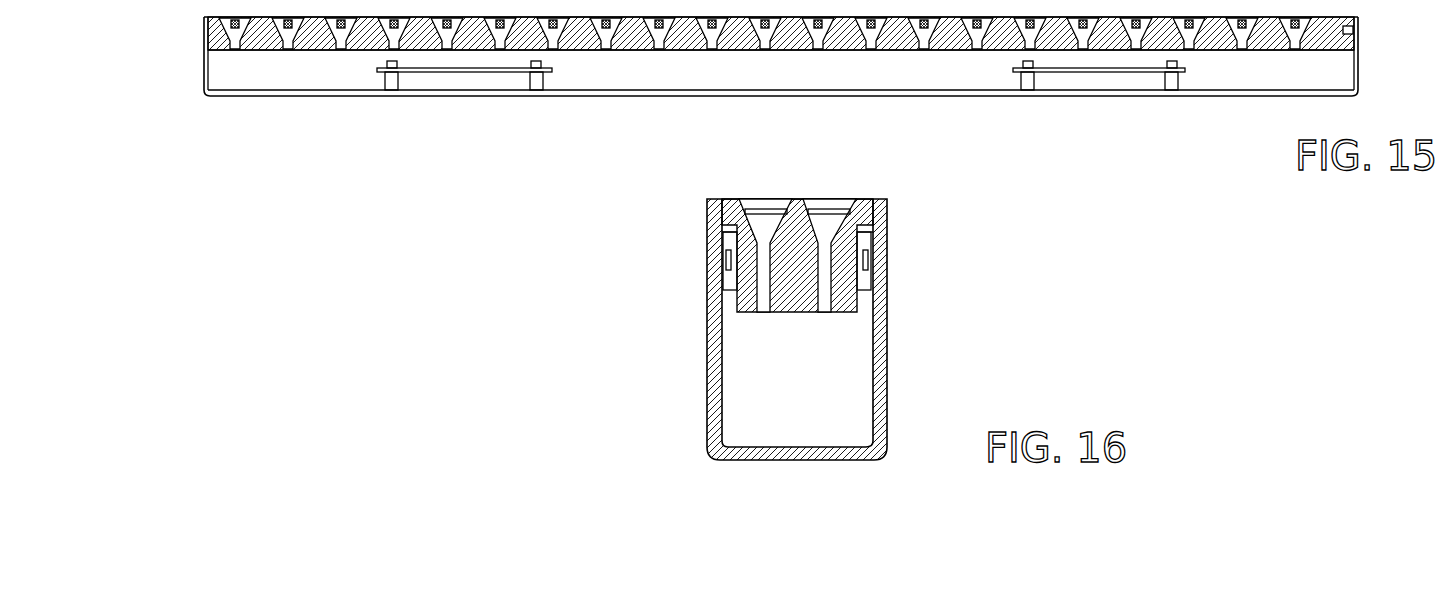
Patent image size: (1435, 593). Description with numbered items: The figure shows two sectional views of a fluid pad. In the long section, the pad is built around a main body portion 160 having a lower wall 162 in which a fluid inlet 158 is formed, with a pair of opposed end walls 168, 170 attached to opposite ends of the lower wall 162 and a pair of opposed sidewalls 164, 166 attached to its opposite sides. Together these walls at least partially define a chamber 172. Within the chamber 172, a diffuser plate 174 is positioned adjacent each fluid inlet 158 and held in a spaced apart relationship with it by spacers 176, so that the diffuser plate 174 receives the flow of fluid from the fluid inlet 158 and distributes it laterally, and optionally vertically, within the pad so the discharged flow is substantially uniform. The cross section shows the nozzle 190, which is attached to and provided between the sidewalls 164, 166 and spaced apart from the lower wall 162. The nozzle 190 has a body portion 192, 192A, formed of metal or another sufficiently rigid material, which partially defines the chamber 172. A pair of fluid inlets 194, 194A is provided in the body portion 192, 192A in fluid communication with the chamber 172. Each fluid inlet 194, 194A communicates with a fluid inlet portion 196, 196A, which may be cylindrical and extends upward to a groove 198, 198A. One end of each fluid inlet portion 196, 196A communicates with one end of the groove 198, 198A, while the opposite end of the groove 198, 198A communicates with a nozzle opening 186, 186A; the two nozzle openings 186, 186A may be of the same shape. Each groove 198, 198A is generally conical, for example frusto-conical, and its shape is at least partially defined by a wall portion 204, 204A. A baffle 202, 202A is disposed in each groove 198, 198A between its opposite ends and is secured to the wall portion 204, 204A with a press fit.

In FIG. 15, the fluid inlet 158 is at (777, 133).
In FIG. 15, the main body portion 160 is at (1203, 95).
In FIG. 16, the main body portion 160 is at (882, 402).
In FIG. 15, the lower wall 162 is at (620, 95).
In FIG. 16, the lower wall 162 is at (875, 460).
In FIG. 16, the sidewall 164 is at (880, 375).
In FIG. 16, the sidewall 166 is at (722, 297).
In FIG. 15, the end wall 168 is at (206, 62).
In FIG. 15, the end wall 170 is at (1358, 60).
In FIG. 15, the chamber 172 is at (811, 85).
In FIG. 16, the chamber 172 is at (817, 400).
In FIG. 15, the diffuser plate 174 is at (473, 72).
In FIG. 15, the spacer 176 is at (377, 95).
In FIG. 16, the nozzle opening 186 is at (847, 212).
In FIG. 16, the nozzle opening 186A is at (748, 211).
In FIG. 16, the nozzle 190 is at (858, 250).
In FIG. 16, the body portion 192 is at (858, 312).
In FIG. 16, the body portion 192A is at (655, 287).
In FIG. 16, the fluid inlet 194 is at (827, 312).
In FIG. 16, the fluid inlet 194A is at (762, 312).
In FIG. 16, the fluid inlet portion 196 is at (866, 290).
In FIG. 16, the fluid inlet portion 196A is at (730, 290).
In FIG. 16, the groove 198 is at (873, 233).
In FIG. 16, the groove 198A is at (720, 232).
In FIG. 16, the baffle 202 is at (820, 200).
In FIG. 16, the baffle 202A is at (773, 207).
In FIG. 16, the wall portion 204 is at (866, 262).
In FIG. 16, the wall portion 204A is at (728, 260).